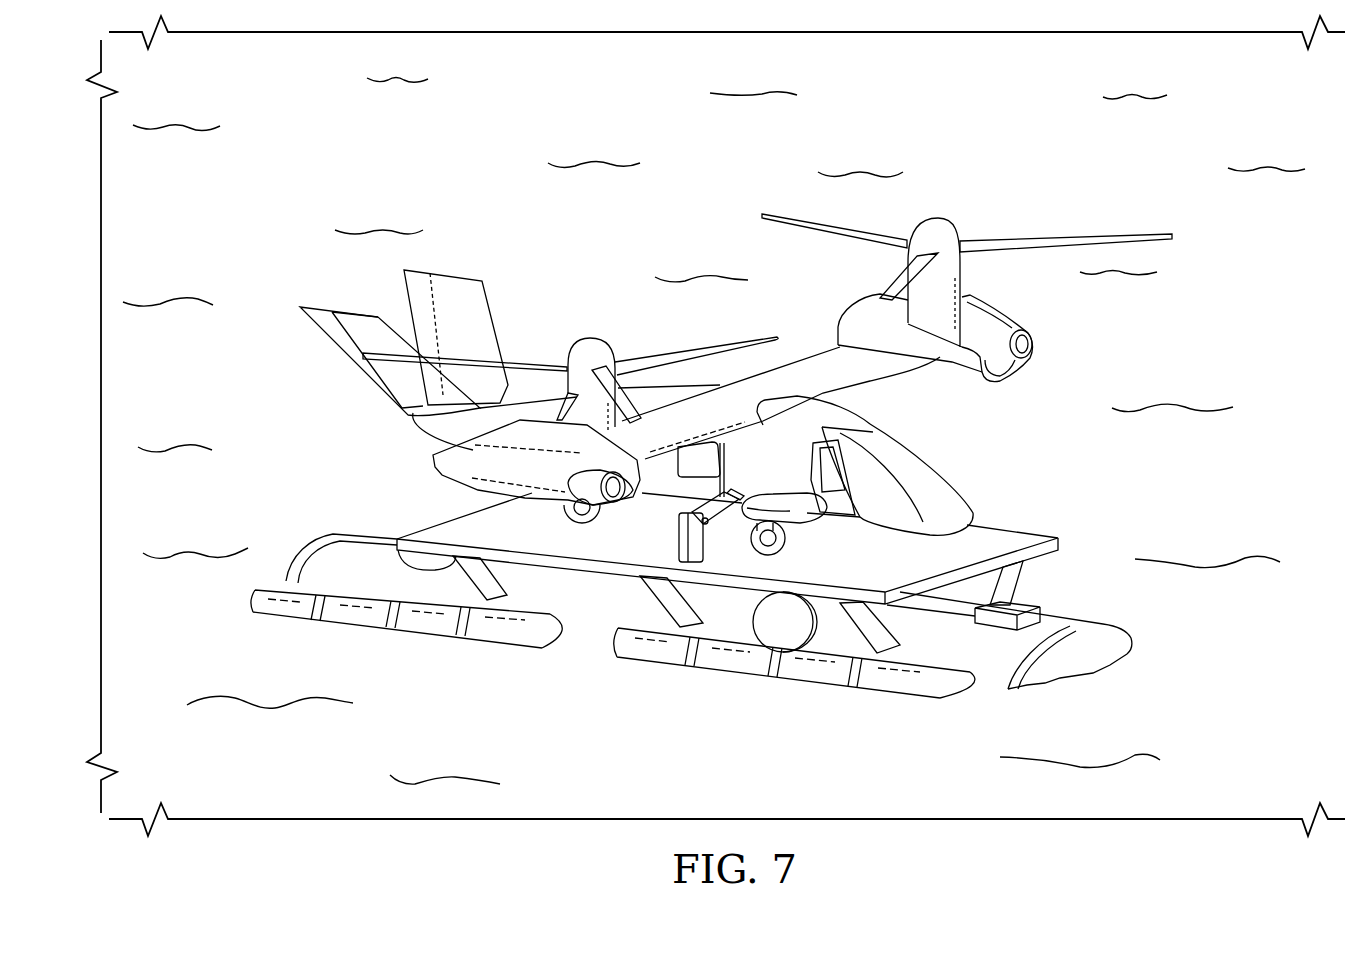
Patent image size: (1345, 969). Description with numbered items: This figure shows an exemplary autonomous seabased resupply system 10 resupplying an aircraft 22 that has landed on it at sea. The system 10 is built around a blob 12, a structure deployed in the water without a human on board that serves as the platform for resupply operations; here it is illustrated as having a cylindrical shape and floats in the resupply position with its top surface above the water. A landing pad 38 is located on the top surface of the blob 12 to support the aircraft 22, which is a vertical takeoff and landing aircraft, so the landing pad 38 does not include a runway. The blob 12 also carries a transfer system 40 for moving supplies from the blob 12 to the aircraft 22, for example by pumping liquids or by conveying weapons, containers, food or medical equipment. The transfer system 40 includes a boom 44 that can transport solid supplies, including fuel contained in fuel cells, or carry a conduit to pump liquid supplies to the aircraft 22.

The autonomous seabased resupply system 10 is at (992, 114).
The blob 12 is at (1075, 664).
The aircraft 22 is at (940, 482).
The landing pad 38 is at (1010, 542).
The transfer system 40 is at (664, 543).
The boom 44 is at (730, 515).